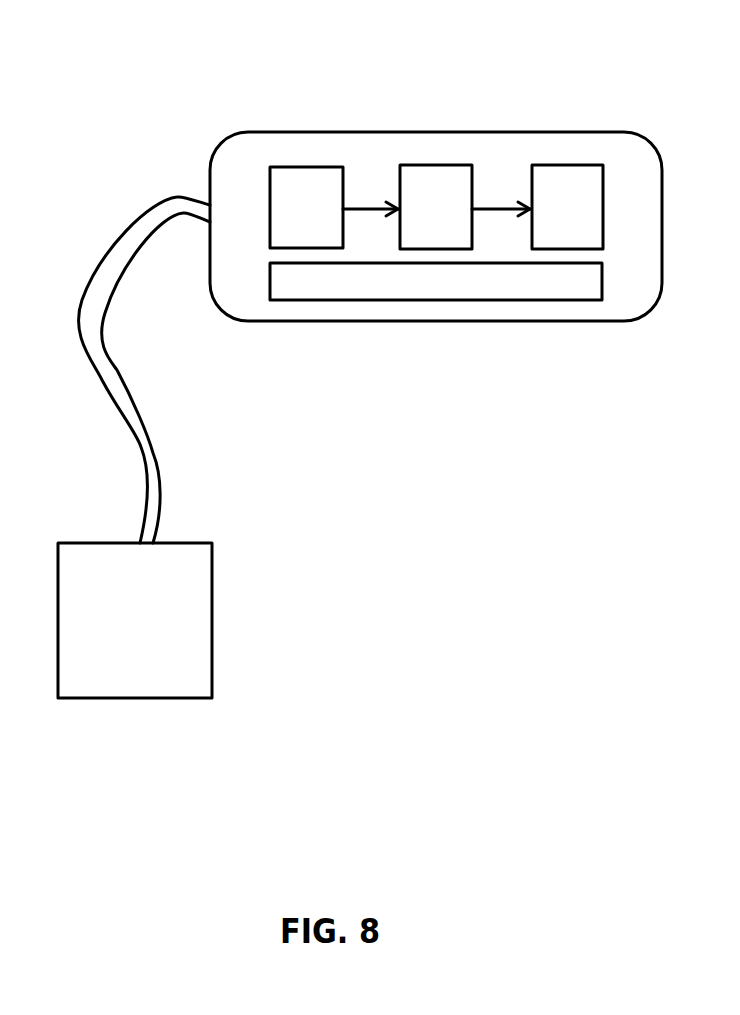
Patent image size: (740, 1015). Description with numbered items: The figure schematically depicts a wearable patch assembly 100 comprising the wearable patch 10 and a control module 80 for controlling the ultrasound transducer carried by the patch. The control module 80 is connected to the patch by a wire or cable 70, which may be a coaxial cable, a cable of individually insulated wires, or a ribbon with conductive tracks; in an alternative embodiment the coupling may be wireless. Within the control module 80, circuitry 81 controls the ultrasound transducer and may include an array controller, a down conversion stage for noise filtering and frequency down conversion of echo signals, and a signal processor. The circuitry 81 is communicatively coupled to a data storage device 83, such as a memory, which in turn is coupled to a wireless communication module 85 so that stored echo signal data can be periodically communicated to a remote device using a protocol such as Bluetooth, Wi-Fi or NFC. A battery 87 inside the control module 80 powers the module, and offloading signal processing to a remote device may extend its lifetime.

The wearable patch assembly 100 is at (360, 422).
The control module 80 is at (436, 225).
The circuitry 81 is at (298, 183).
The data storage device 83 is at (442, 183).
The wireless communication module 85 is at (567, 183).
The battery 87 is at (568, 290).
The wire or cable 70 is at (127, 418).
The wearable patch 10 is at (198, 628).